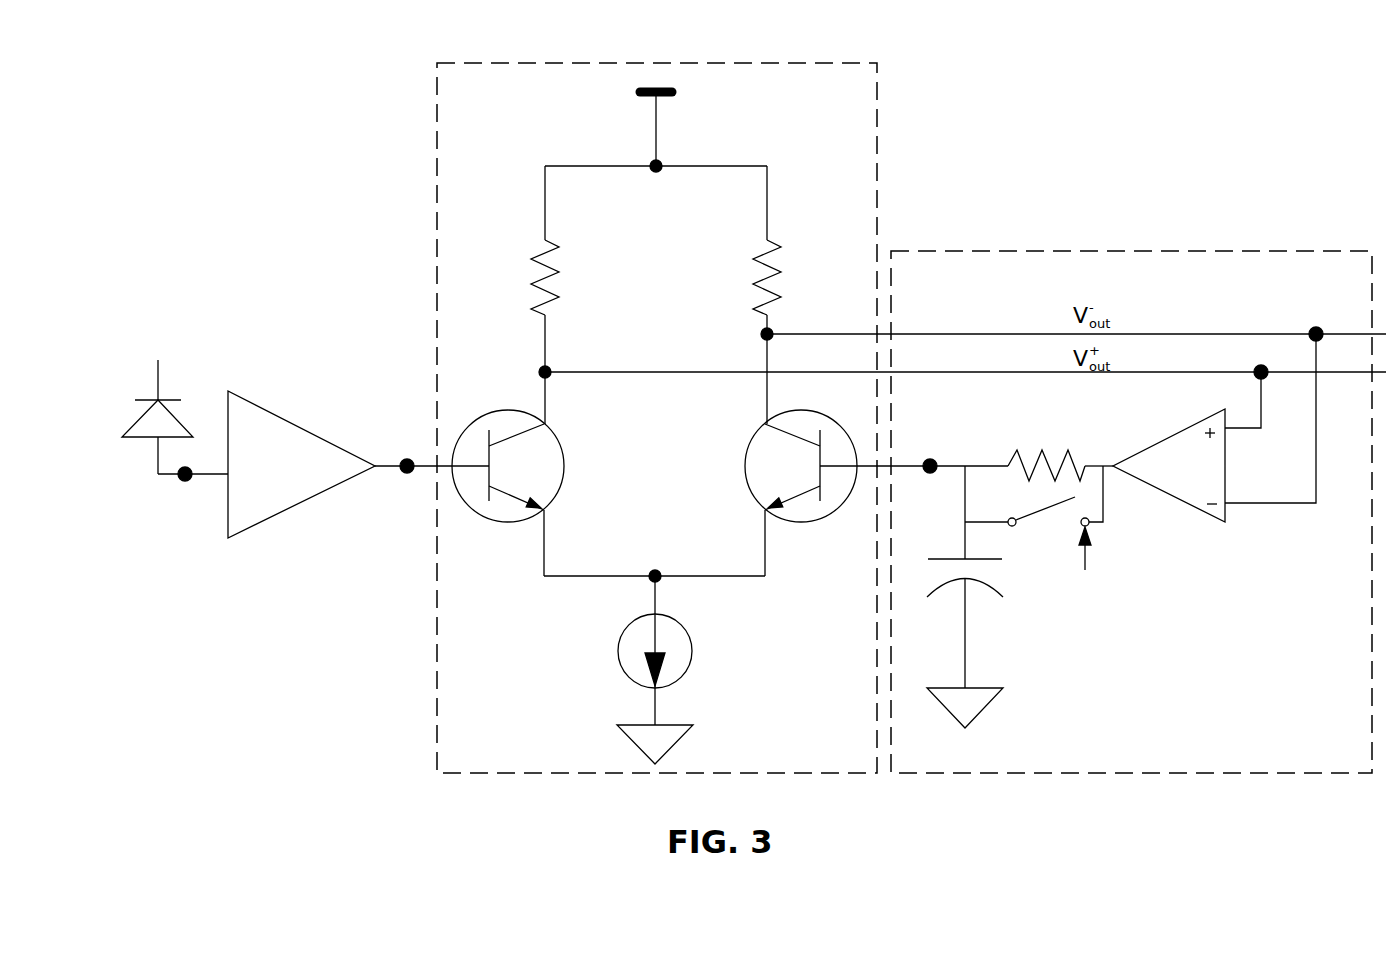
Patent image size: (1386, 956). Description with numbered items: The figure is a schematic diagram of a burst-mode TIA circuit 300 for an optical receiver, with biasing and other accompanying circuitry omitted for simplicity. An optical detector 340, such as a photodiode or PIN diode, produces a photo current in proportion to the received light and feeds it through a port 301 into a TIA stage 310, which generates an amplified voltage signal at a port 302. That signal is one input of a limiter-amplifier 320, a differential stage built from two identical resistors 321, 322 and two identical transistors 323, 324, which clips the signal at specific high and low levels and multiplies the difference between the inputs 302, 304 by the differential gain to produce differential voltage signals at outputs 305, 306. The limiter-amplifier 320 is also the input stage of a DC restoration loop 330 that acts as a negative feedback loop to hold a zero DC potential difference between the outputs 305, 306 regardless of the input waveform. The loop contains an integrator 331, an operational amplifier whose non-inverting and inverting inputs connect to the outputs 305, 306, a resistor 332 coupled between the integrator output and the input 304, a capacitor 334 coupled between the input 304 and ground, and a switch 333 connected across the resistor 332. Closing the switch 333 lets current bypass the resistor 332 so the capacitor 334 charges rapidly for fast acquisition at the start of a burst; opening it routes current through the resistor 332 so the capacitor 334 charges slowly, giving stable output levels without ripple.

The burst-mode TIA circuit 300 is at (1097, 96).
The optical detector 340 is at (140, 438).
The port 301 is at (193, 461).
The TIA stage 310 is at (293, 423).
The port 302 is at (432, 454).
The limiter-amplifier 320 is at (614, 63).
The resistor 321 is at (556, 247).
The resistor 322 is at (765, 254).
The transistor 323 is at (557, 437).
The transistor 324 is at (750, 451).
The DC restoration loop 330 is at (1150, 251).
The input 304 is at (934, 454).
The output 305 is at (1257, 385).
The output 306 is at (1284, 400).
The integrator 331 is at (1173, 432).
The resistor 332 is at (1038, 452).
The switch 333 is at (1040, 517).
The capacitor 334 is at (955, 557).